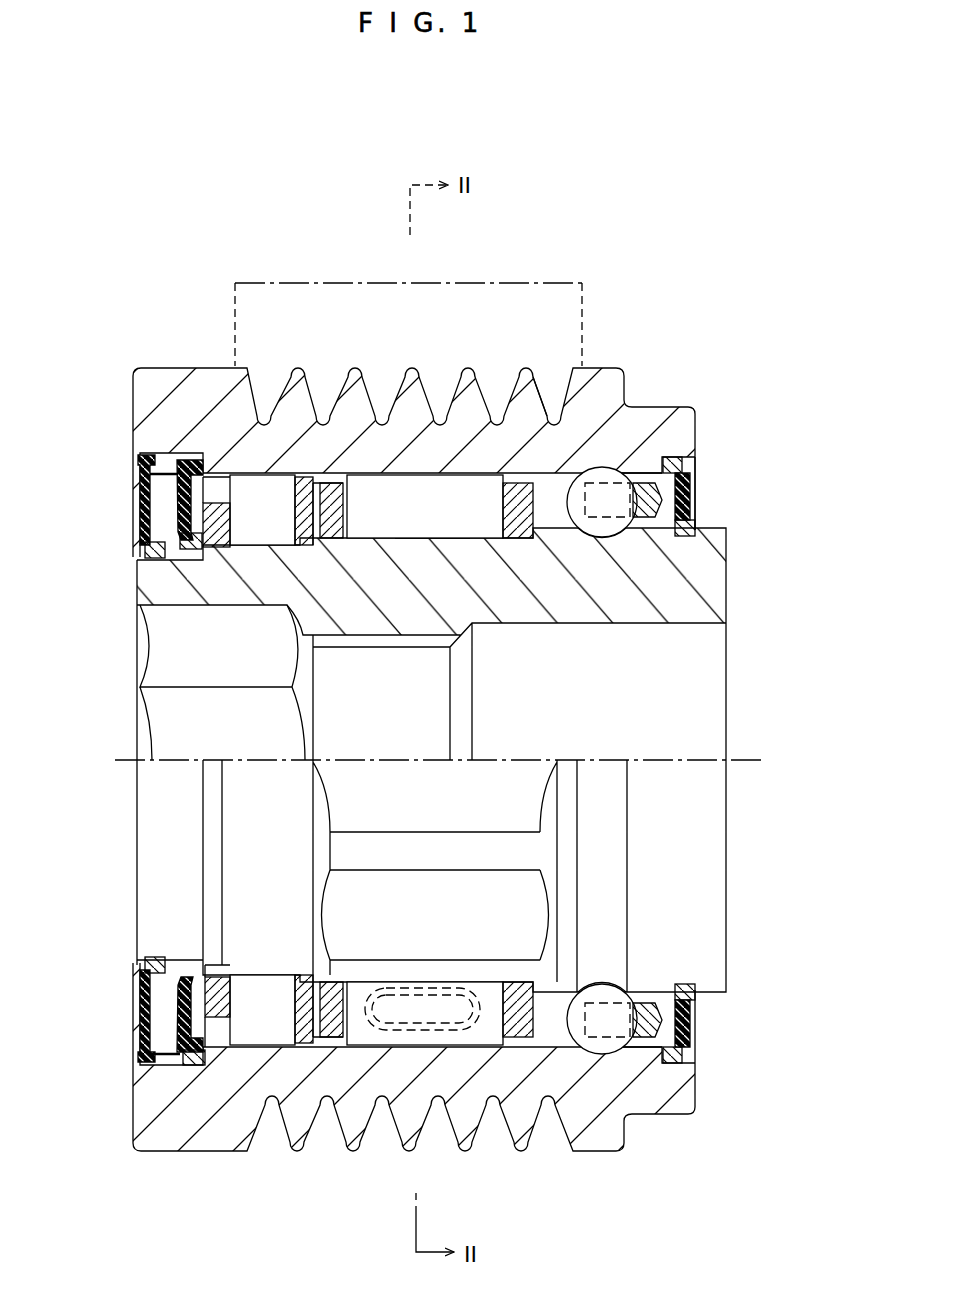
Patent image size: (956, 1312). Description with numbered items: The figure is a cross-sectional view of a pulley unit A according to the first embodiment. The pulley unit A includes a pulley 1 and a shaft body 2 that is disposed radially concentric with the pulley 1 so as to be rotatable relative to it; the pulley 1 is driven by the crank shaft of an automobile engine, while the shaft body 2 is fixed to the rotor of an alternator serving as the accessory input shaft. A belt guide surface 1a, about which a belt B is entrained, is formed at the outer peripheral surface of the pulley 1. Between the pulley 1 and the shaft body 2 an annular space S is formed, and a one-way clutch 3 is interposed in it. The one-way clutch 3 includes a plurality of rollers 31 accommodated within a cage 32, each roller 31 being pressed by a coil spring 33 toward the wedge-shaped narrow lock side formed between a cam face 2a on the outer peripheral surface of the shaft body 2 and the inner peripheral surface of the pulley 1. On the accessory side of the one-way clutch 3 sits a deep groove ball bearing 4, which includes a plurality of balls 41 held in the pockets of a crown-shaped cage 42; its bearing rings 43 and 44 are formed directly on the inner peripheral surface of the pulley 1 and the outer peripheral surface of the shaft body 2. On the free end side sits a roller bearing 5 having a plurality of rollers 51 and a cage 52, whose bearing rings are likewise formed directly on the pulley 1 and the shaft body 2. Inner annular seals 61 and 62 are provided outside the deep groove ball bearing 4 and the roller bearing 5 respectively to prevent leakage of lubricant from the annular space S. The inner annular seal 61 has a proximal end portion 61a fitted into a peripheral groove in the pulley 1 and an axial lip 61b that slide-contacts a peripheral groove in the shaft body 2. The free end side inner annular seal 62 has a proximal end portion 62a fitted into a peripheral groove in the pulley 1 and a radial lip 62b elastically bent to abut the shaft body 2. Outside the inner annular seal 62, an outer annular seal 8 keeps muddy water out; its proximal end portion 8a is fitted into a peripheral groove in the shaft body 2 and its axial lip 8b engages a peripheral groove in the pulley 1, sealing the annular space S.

The pulley 1 is at (688, 417).
The belt guide surface 1a is at (532, 378).
The shaft body 2 is at (712, 578).
The cam face 2a is at (407, 538).
The one-way clutch 3 is at (423, 748).
The rollers 31 is at (468, 492).
The cage 32 is at (333, 490).
The coil spring 33 is at (378, 1032).
The deep groove ball bearing 4 is at (645, 682).
The balls 41 is at (595, 468).
The cage 42 is at (656, 478).
The bearing ring 43 is at (623, 461).
The bearing ring 44 is at (617, 533).
The roller bearing 5 is at (246, 679).
The rollers 51 is at (274, 482).
The cage 52 is at (214, 503).
The inner annular seal 61 is at (723, 739).
The proximal end portion 61a is at (670, 458).
The axial lip 61b is at (690, 522).
The inner annular seal 62 is at (144, 687).
The proximal end portion 62a is at (178, 460).
The radial lip 62b is at (180, 552).
The outer annular seal 8 is at (136, 687).
The proximal end portion 8a is at (145, 546).
The axial lip 8b is at (143, 452).
The annular space S is at (162, 472).
The pulley unit A is at (703, 277).
The belt B is at (532, 283).